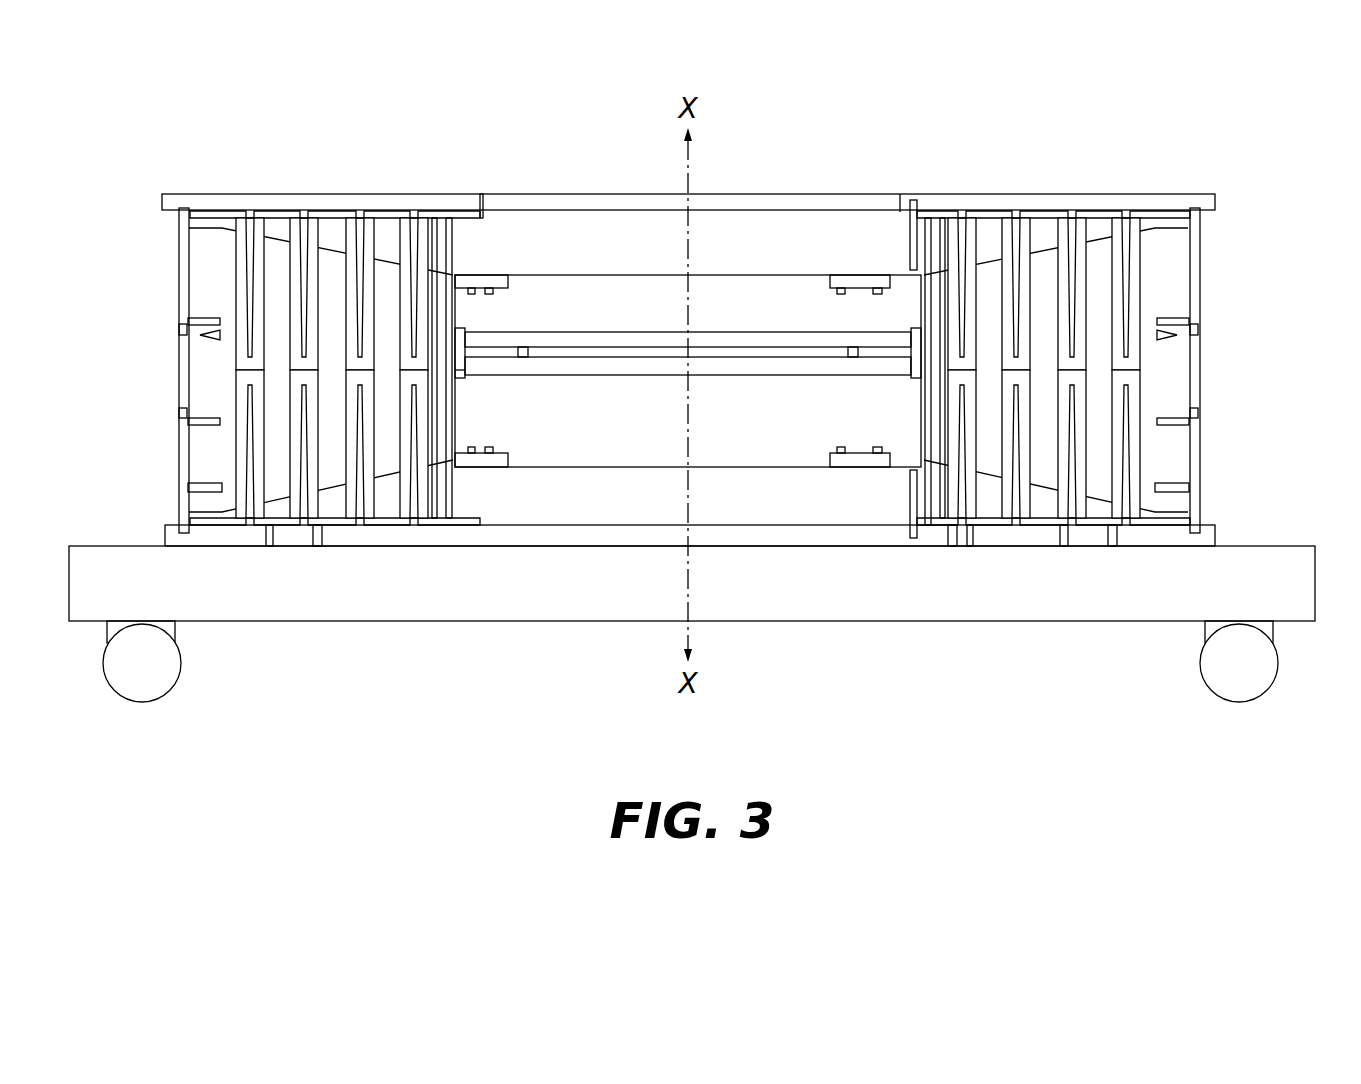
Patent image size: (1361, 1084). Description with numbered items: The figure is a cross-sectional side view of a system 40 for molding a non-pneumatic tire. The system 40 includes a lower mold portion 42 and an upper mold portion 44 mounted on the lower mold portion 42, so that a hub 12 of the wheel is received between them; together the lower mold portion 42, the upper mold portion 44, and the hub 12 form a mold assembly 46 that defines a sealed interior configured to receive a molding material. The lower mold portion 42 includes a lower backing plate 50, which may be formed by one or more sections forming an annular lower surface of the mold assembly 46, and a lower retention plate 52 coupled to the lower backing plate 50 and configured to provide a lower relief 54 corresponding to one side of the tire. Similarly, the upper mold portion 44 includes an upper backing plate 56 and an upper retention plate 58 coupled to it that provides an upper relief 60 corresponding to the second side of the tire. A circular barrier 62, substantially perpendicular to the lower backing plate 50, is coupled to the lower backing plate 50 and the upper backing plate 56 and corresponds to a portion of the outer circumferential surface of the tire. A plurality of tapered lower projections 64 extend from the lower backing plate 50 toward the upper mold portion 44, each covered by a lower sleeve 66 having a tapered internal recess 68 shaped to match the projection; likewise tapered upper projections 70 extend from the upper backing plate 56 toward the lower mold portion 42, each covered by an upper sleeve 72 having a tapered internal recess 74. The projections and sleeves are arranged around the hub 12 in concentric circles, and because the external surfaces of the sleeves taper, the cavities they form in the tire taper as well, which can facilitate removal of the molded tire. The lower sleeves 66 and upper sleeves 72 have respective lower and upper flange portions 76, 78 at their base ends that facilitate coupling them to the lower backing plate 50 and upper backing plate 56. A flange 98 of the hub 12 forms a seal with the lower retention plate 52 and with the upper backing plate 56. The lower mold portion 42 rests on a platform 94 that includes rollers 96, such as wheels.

The hub 12 is at (770, 413).
The system 40 is at (995, 114).
The lower mold portion 42 is at (166, 458).
The upper mold portion 44 is at (162, 268).
The mold assembly 46 is at (1232, 298).
The lower backing plate 50 is at (388, 546).
The lower retention plate 52 is at (493, 510).
The lower relief 54 is at (390, 538).
The upper backing plate 56 is at (292, 203).
The upper retention plate 58 is at (461, 228).
The upper relief 60 is at (418, 300).
The circular barrier 62 is at (186, 372).
The lower projections 64 is at (424, 485).
The lower sleeves 66 is at (418, 374).
The internal recess 68 is at (418, 410).
The upper projections 70 is at (430, 228).
The upper sleeves 72 is at (418, 367).
The internal recess 74 is at (443, 270).
The lower flange portion 76 is at (290, 527).
The upper flange portion 78 is at (329, 217).
The platform 94 is at (1300, 578).
The rollers 96 is at (157, 678).
The flange 98 is at (455, 442).